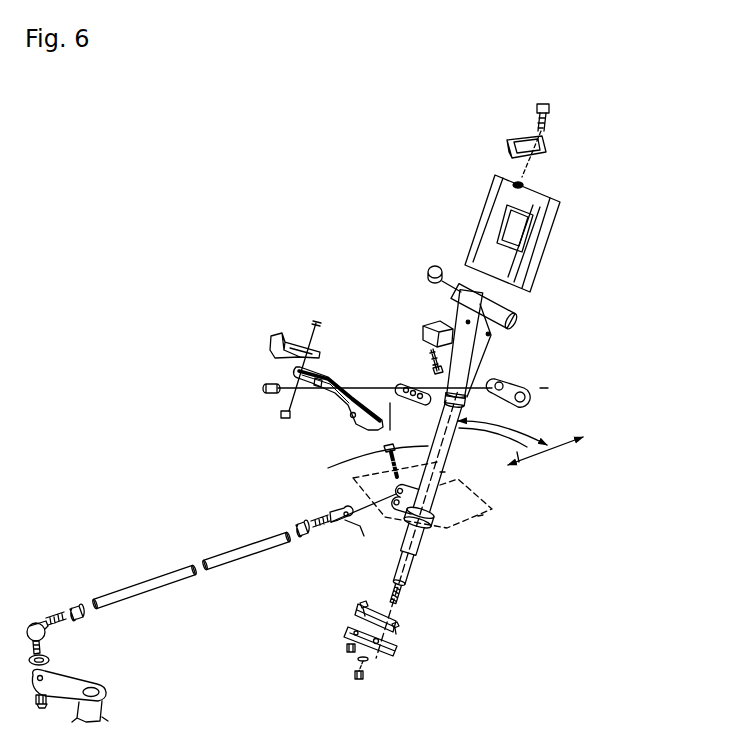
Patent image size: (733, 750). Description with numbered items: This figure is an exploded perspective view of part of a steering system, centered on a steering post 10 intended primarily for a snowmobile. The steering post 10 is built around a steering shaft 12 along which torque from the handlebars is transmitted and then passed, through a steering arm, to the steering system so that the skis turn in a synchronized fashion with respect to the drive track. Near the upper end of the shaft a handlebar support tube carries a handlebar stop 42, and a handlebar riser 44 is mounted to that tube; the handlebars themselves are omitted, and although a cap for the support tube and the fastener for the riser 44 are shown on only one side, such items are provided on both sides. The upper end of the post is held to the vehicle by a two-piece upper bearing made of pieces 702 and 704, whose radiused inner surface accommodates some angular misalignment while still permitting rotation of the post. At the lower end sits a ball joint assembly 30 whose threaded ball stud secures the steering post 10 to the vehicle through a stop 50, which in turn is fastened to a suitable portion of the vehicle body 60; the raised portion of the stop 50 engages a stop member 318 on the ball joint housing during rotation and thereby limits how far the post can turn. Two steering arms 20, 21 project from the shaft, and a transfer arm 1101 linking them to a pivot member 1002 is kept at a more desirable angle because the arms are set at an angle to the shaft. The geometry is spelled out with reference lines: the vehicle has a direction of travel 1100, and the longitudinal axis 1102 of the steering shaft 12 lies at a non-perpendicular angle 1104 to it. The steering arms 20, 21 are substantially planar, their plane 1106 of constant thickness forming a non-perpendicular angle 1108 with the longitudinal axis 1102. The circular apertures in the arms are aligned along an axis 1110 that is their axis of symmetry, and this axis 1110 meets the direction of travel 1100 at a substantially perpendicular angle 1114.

The steering post 10 is at (493, 357).
The steering shaft 12 is at (453, 462).
The steering arm 20 is at (450, 508).
The steering arm 21 is at (440, 533).
The ball joint assembly 30 is at (410, 573).
The handlebar stop 42 is at (430, 291).
The handlebar riser 44 is at (555, 282).
The stop 50 is at (396, 626).
The vehicle body 60 is at (398, 648).
The stop member 318 is at (406, 592).
The upper bearing piece 702 is at (532, 400).
The upper bearing piece 704 is at (399, 388).
The pivot member 1002 is at (77, 674).
The direction of travel 1100 is at (530, 448).
The tie rod 1101 is at (123, 587).
The longitudinal axis 1102 is at (394, 408).
The non-perpendicular angle 1104 is at (519, 462).
The plane 1106 is at (483, 515).
The non-perpendicular angle 1108 is at (440, 472).
The axis 1110 is at (311, 358).
The substantially perpendicular angle 1114 is at (528, 449).